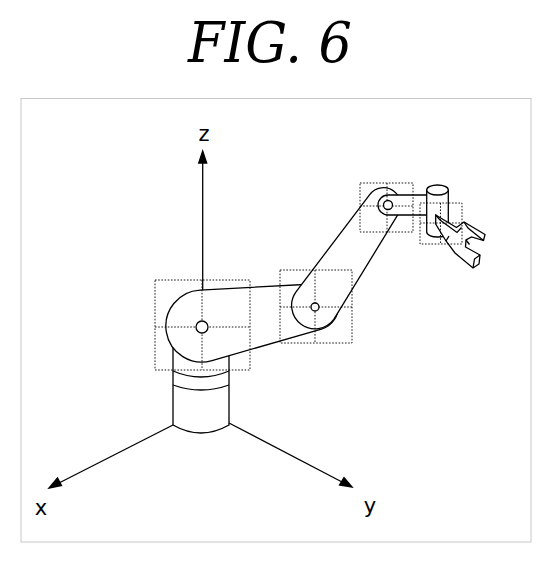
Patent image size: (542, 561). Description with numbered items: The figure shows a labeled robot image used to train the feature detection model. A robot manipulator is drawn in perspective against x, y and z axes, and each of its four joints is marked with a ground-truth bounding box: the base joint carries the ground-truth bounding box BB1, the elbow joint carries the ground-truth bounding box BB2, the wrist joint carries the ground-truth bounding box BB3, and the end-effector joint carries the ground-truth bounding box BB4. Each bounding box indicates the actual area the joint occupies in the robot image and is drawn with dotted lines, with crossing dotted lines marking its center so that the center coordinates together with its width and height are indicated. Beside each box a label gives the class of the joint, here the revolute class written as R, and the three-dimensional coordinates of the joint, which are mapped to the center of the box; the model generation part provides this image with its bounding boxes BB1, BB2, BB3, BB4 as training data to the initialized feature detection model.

The ground-truth bounding box BB1 is at (174, 296).
The ground-truth bounding box BB2 is at (331, 336).
The ground-truth bounding box BB3 is at (386, 179).
The ground-truth bounding box BB4 is at (429, 243).